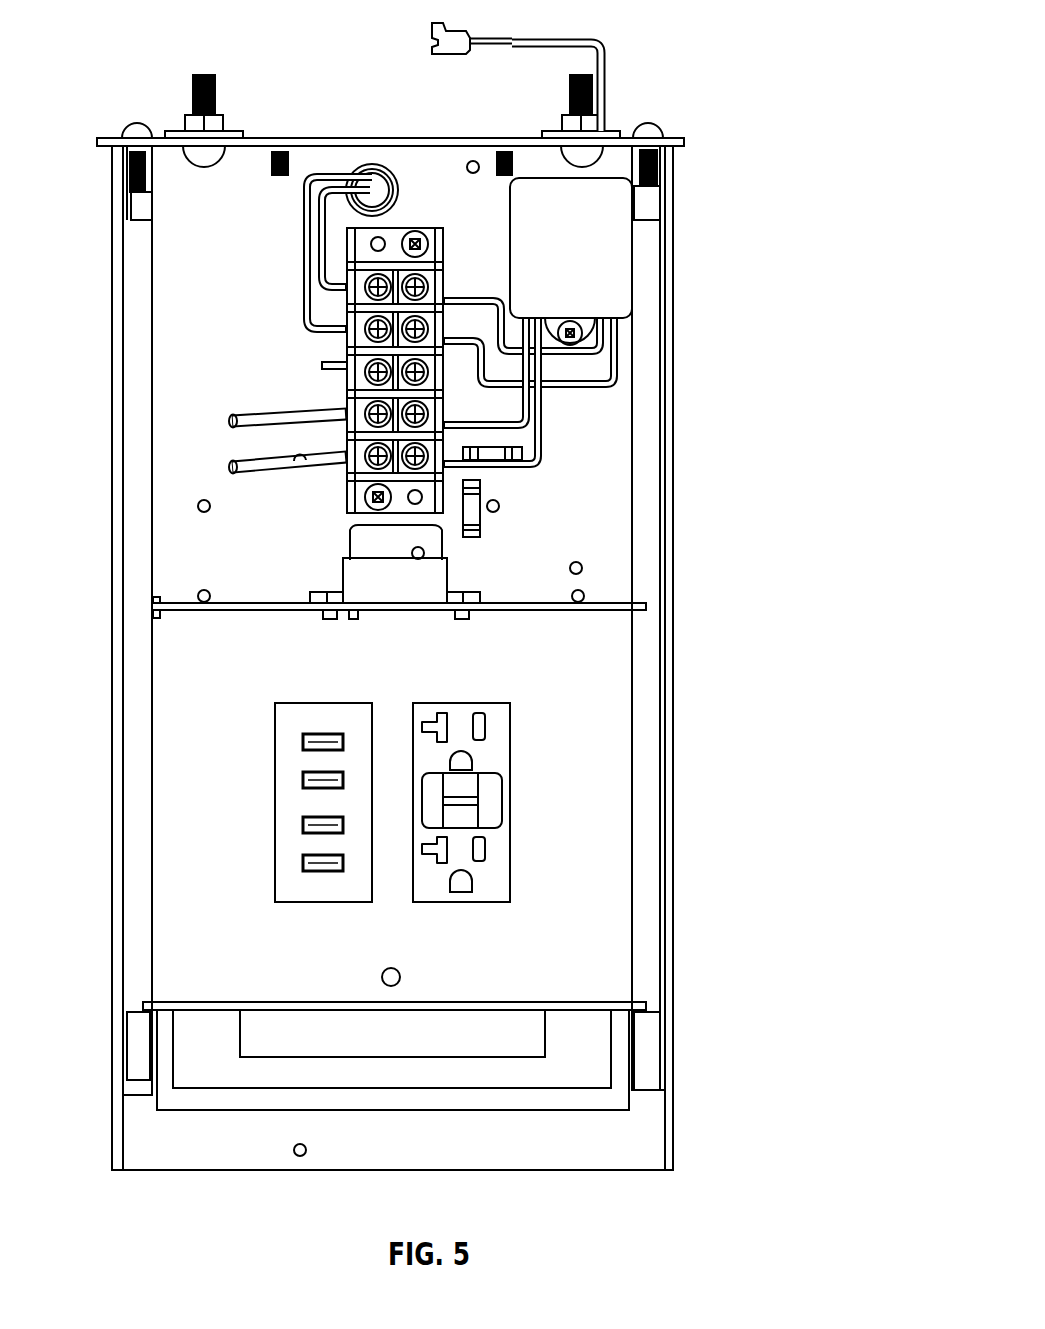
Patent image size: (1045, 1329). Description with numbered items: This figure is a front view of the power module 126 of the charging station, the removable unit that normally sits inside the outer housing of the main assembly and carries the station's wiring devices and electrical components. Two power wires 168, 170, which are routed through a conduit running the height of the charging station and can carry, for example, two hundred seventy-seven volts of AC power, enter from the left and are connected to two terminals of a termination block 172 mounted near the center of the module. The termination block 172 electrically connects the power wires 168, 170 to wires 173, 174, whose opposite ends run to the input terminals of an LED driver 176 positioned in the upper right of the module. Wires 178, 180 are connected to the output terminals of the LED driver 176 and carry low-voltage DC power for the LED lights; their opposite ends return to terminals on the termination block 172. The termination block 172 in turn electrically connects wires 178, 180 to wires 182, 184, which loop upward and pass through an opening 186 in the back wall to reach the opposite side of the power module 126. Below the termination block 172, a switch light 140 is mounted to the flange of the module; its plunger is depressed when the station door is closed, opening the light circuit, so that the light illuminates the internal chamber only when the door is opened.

The power module 126 is at (787, 53).
The switch light 140 is at (435, 578).
The power wire 168 is at (269, 416).
The power wire 170 is at (245, 462).
The termination block 172 is at (357, 510).
The wire 173 is at (528, 403).
The wire 174 is at (541, 466).
The LED driver 176 is at (608, 282).
The wire 178 is at (603, 347).
The wire 180 is at (601, 388).
The wire 182 is at (320, 240).
The wire 184 is at (306, 300).
The opening 186 is at (399, 193).